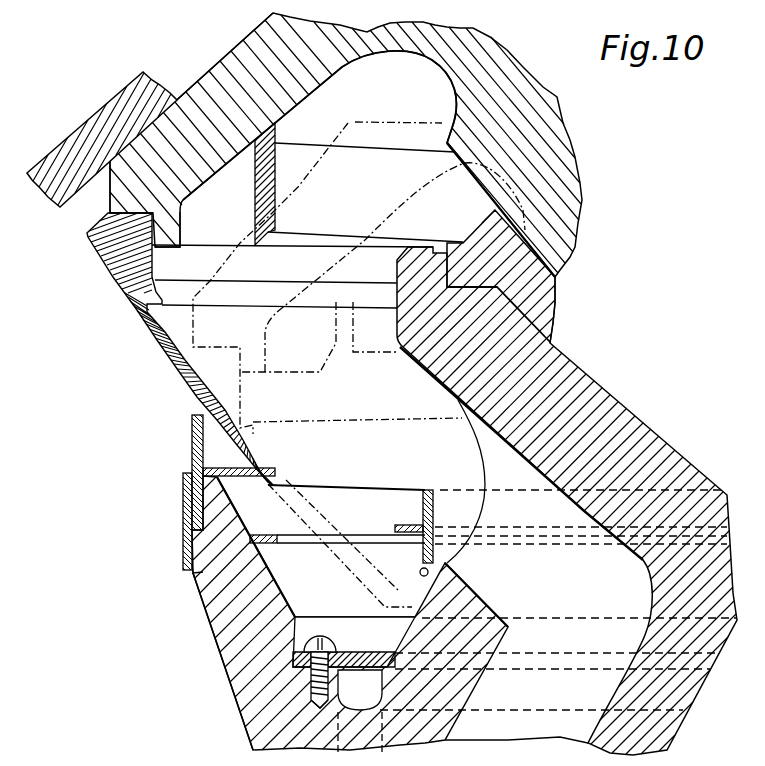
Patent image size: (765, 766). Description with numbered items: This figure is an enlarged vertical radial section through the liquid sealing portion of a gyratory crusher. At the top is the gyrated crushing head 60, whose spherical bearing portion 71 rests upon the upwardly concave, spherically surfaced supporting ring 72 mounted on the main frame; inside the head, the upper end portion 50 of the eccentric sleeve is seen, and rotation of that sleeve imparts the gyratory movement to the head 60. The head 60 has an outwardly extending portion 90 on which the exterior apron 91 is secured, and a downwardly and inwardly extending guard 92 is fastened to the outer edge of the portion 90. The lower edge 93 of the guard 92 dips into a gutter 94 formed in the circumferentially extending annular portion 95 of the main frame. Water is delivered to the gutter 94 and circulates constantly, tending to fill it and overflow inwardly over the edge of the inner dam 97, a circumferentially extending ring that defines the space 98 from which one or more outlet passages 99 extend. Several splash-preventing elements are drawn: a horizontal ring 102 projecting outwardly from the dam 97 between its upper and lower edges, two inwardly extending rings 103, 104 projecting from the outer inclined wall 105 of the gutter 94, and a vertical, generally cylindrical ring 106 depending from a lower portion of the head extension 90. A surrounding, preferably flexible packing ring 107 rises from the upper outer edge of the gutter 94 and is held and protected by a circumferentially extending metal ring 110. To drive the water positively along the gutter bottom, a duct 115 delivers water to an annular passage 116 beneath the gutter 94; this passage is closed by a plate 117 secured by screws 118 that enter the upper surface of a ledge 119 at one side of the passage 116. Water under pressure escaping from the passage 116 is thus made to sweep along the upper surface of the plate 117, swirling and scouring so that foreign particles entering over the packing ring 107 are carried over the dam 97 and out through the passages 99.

The upper end portion 50 is at (348, 123).
The gyrated crushing head 60 is at (557, 98).
The spherical bearing portion 71 is at (548, 200).
The supporting ring 72 is at (557, 256).
The outwardly extending portion 90 is at (223, 70).
The exterior apron 91 is at (63, 147).
The guard 92 is at (100, 262).
The lower edge 93 is at (272, 482).
The gutter 94 is at (232, 595).
The annular portion 95 is at (230, 630).
The inner dam 97 is at (430, 490).
The space 98 is at (448, 510).
The outlet passage 99 is at (583, 603).
The horizontal ring 102 is at (403, 527).
The inwardly extending ring 103 is at (233, 475).
The inwardly extending ring 104 is at (268, 537).
The outer inclined wall 105 is at (193, 582).
The vertical ring 106 is at (270, 198).
The packing ring 107 is at (192, 448).
The metal ring 110 is at (183, 528).
The duct 115 is at (350, 742).
The annular passage 116 is at (355, 710).
The plate 117 is at (385, 643).
The screw 118 is at (317, 637).
The ledge 119 is at (305, 668).